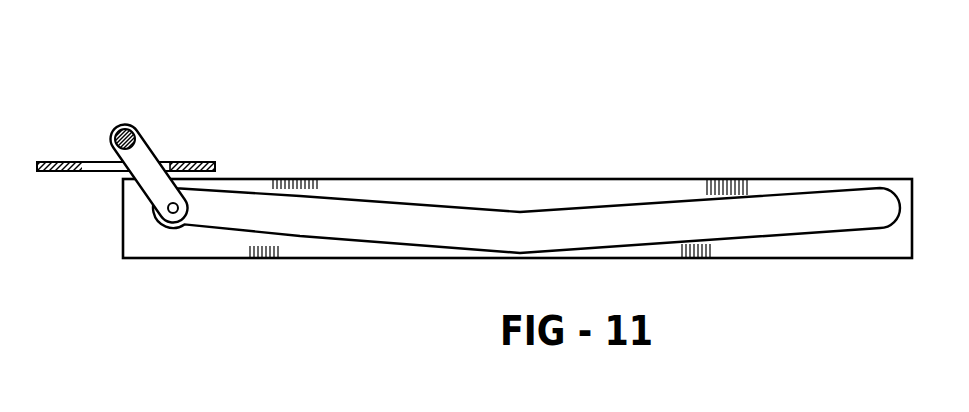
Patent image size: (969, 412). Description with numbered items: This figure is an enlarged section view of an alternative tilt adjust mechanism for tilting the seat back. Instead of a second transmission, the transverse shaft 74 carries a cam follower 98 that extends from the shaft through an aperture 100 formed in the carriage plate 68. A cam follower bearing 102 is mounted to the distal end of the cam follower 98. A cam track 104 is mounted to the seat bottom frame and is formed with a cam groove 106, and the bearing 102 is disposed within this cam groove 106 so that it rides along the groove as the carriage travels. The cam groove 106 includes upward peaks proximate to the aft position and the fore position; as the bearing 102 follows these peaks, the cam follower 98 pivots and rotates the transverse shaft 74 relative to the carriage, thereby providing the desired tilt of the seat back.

The transverse shaft 74 is at (118, 128).
The cam follower 98 is at (153, 148).
The aperture 100 is at (168, 160).
The carriage plate 68 is at (218, 168).
The cam follower bearing 102 is at (197, 222).
The cam track 104 is at (444, 178).
The cam groove 106 is at (411, 203).